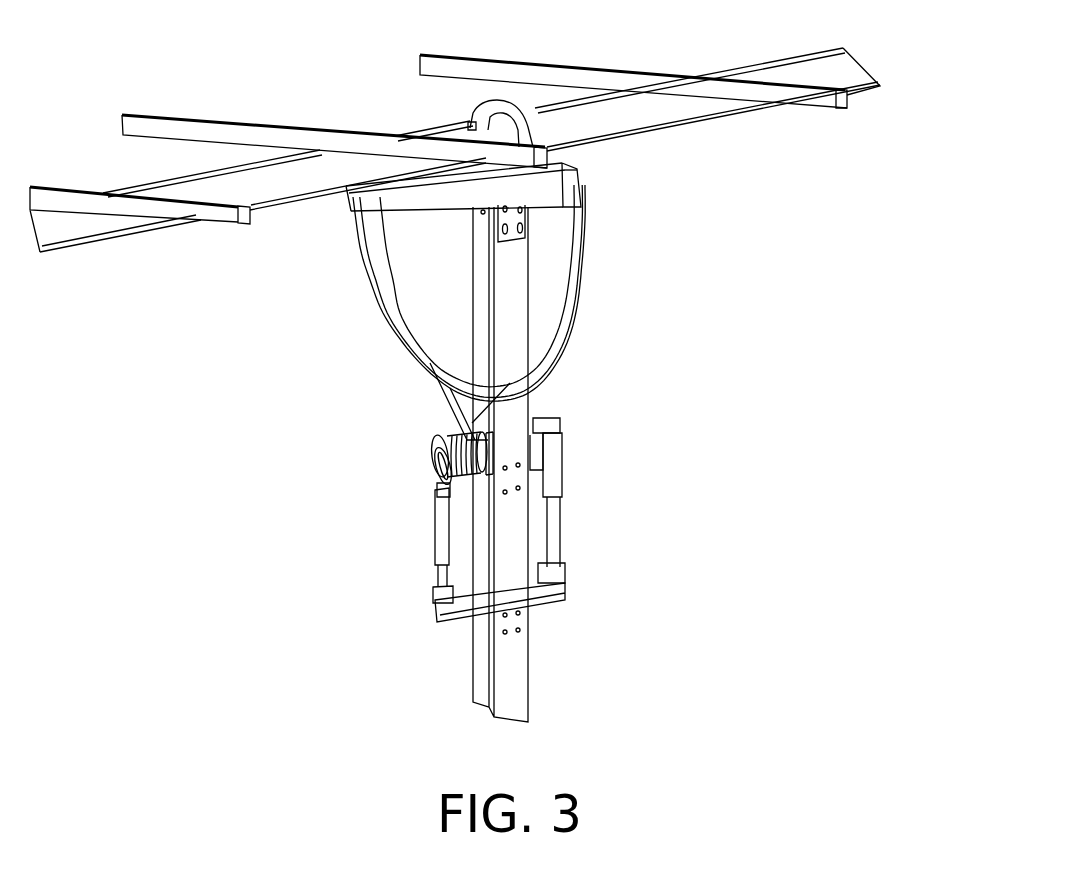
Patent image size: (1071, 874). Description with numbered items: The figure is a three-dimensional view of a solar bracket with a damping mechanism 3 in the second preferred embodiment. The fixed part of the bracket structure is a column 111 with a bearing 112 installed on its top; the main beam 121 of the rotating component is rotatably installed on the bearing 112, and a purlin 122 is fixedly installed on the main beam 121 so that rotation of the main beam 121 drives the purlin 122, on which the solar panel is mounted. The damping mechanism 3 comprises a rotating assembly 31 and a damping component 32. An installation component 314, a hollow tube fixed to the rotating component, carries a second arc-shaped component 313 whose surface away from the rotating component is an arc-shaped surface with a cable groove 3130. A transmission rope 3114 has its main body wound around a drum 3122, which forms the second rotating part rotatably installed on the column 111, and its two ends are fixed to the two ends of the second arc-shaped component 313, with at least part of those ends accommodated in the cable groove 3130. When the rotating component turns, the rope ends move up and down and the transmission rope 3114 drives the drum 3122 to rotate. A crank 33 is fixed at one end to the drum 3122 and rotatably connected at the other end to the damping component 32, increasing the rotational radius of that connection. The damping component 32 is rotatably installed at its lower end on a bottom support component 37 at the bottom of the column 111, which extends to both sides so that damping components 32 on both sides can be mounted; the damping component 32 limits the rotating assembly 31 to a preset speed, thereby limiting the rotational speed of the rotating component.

The damping mechanism 3 is at (755, 498).
The rotating assembly 31 is at (757, 384).
The damping component 32 is at (443, 522).
The crank 33 is at (437, 468).
The bottom support component 37 is at (447, 615).
The column 111 is at (508, 307).
The bearing 112 is at (500, 115).
The main beam 121 is at (678, 112).
The purlin 122 is at (227, 132).
The second arc-shaped component 313 is at (547, 337).
The installation component 314 is at (548, 195).
The transmission rope 3114 is at (463, 410).
The drum 3122 is at (445, 441).
The cable groove 3130 is at (568, 307).